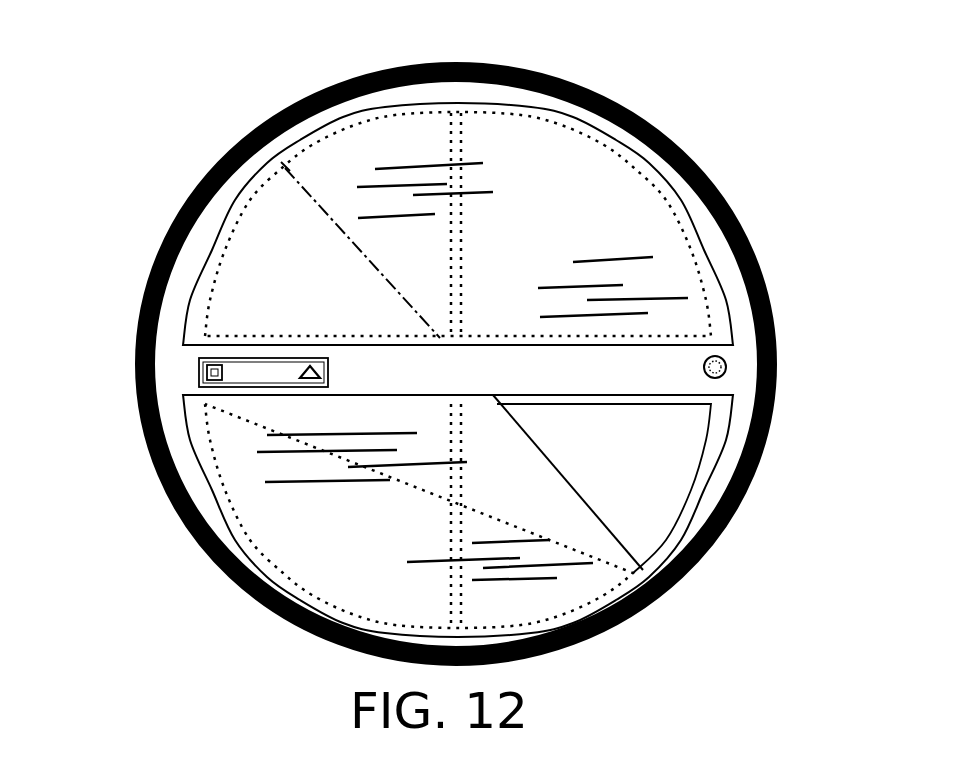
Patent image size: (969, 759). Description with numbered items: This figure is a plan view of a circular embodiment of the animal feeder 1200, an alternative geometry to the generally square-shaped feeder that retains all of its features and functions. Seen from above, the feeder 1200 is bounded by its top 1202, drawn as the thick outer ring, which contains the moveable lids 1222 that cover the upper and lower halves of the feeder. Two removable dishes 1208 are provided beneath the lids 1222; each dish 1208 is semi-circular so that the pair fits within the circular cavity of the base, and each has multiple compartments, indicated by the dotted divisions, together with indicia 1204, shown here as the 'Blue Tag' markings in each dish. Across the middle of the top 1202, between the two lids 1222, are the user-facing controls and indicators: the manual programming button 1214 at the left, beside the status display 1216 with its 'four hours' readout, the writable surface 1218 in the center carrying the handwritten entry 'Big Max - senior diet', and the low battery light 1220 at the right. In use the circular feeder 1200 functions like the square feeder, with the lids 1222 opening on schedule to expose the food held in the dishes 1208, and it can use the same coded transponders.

The animal feeder 1200 is at (210, 127).
The top 1202 is at (178, 213).
The indicia 1204 is at (244, 298).
The removable dishes 1208 is at (700, 232).
The manual programming button 1214 is at (189, 418).
The status display 1216 is at (263, 387).
The writable surface 1218 is at (640, 352).
The low battery light 1220 is at (728, 358).
The moveable lids 1222 is at (599, 130).